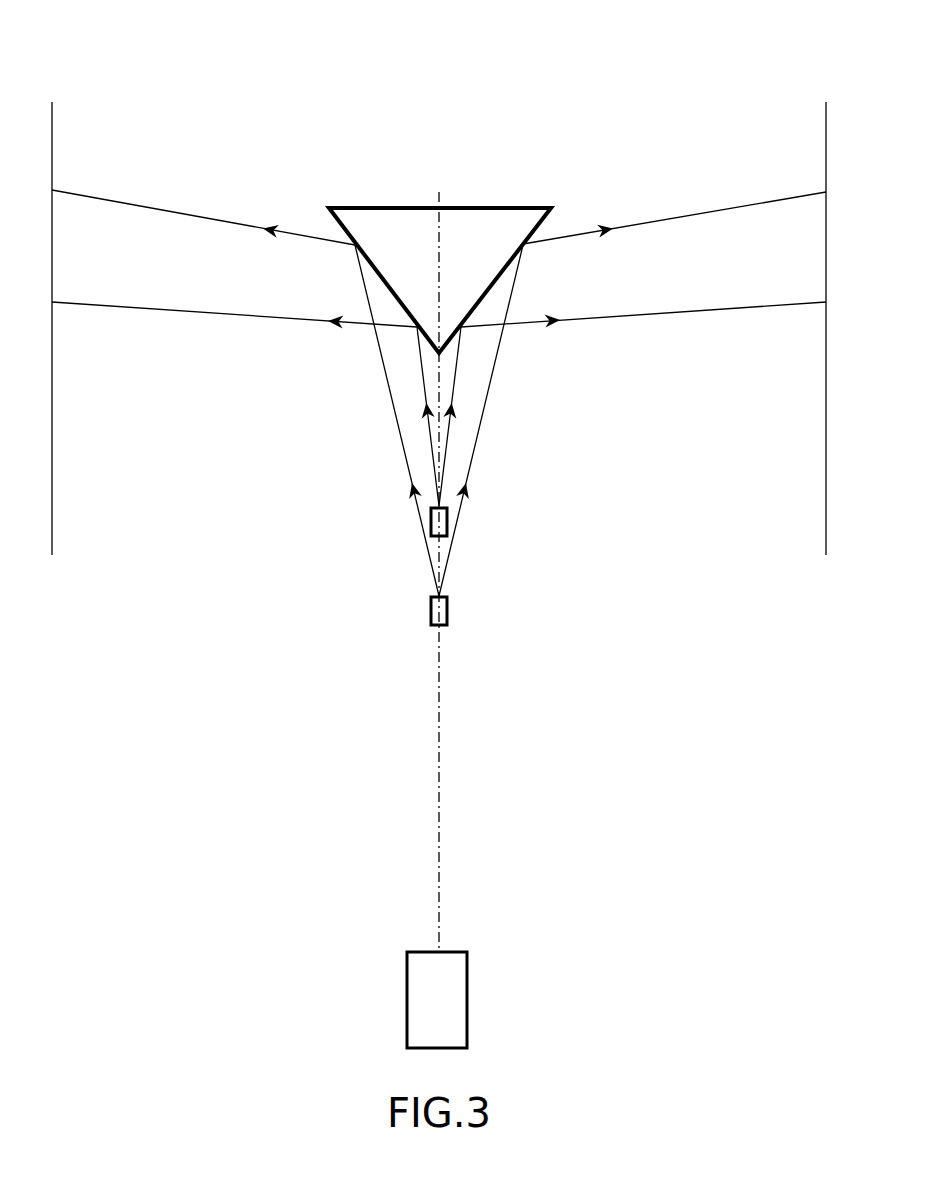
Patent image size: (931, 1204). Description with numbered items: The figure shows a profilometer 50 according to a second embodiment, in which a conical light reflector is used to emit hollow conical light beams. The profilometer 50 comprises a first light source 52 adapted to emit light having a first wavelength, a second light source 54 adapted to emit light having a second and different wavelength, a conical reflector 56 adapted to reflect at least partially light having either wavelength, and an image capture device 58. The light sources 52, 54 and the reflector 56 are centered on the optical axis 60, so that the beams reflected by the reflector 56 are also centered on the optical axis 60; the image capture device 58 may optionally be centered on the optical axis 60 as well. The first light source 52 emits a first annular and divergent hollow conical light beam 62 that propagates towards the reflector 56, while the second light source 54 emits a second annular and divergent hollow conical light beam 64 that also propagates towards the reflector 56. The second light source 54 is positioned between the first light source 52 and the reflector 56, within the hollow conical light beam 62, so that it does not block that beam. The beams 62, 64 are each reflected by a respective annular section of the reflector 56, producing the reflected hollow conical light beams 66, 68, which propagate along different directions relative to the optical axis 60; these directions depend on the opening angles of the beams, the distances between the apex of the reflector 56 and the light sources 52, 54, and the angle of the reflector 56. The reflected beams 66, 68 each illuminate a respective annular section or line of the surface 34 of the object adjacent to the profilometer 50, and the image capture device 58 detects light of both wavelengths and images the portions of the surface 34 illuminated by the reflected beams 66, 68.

The surface 34 is at (52, 152).
The profilometer 50 is at (675, 782).
The first light source 52 is at (447, 612).
The second light source 54 is at (447, 522).
The conical reflector 56 is at (478, 215).
The image capture device 58 is at (452, 998).
The optical axis 60 is at (439, 750).
The first hollow conical light beam 62 is at (405, 458).
The second hollow conical light beam 64 is at (423, 385).
The reflected hollow conical light beam 66 is at (193, 218).
The reflected hollow conical light beam 68 is at (293, 320).